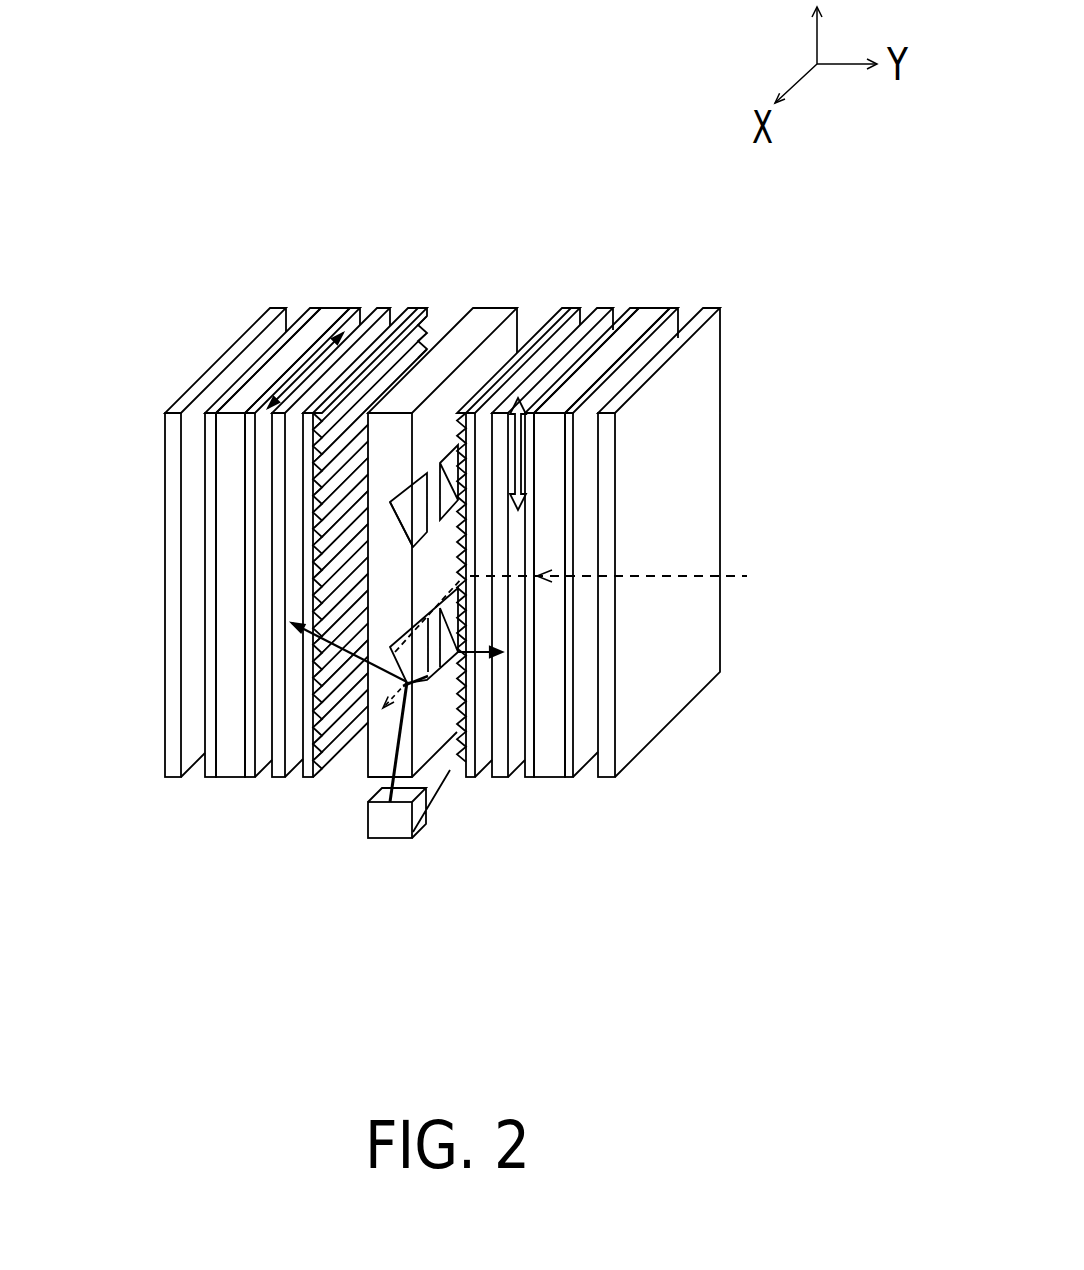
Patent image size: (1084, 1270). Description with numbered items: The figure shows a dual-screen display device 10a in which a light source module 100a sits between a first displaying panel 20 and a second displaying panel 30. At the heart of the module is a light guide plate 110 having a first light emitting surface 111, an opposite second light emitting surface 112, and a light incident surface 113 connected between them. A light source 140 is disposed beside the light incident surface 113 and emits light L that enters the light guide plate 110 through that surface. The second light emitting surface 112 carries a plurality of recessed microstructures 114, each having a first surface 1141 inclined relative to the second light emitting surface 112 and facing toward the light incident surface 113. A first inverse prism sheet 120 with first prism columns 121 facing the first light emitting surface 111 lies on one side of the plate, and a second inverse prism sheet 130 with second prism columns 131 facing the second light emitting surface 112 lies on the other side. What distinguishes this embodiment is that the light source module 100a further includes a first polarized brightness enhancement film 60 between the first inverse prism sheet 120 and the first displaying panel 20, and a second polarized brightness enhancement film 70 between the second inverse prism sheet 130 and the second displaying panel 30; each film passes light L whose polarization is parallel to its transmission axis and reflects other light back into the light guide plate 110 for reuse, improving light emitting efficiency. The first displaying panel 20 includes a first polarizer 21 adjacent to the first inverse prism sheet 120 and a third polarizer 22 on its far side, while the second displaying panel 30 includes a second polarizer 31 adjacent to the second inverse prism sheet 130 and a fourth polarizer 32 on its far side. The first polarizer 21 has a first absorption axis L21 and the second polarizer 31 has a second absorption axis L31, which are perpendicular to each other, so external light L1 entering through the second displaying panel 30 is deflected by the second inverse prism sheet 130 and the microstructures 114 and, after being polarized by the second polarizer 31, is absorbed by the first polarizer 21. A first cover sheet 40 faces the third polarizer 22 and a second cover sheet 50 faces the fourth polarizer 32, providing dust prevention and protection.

The dual-screen display device 10a is at (202, 127).
The first displaying panel 20 is at (251, 514).
The first polarizer 21 is at (250, 777).
The third polarizer 22 is at (210, 777).
The second displaying panel 30 is at (601, 557).
The second polarizer 31 is at (531, 777).
The fourth polarizer 32 is at (571, 777).
The first cover sheet 40 is at (170, 777).
The second cover sheet 50 is at (610, 777).
The first polarized brightness enhancement film 60 is at (278, 777).
The second polarized brightness enhancement film 70 is at (503, 777).
The light source module 100a is at (593, 544).
The light guide plate 110 is at (593, 544).
The first light emitting surface 111 is at (453, 323).
The second light emitting surface 112 is at (507, 333).
The light incident surface 113 is at (380, 779).
The microstructures 114 is at (427, 493).
The first surface 1141 is at (403, 522).
The first inverse prism sheet 120 is at (347, 612).
The first prism columns 121 is at (322, 777).
The second inverse prism sheet 130 is at (512, 632).
The second prism columns 131 is at (470, 758).
The light source 140 is at (392, 830).
The light L is at (415, 812).
The external light L1 is at (747, 576).
The first absorption axis L21 is at (305, 372).
The second absorption axis L31 is at (640, 380).